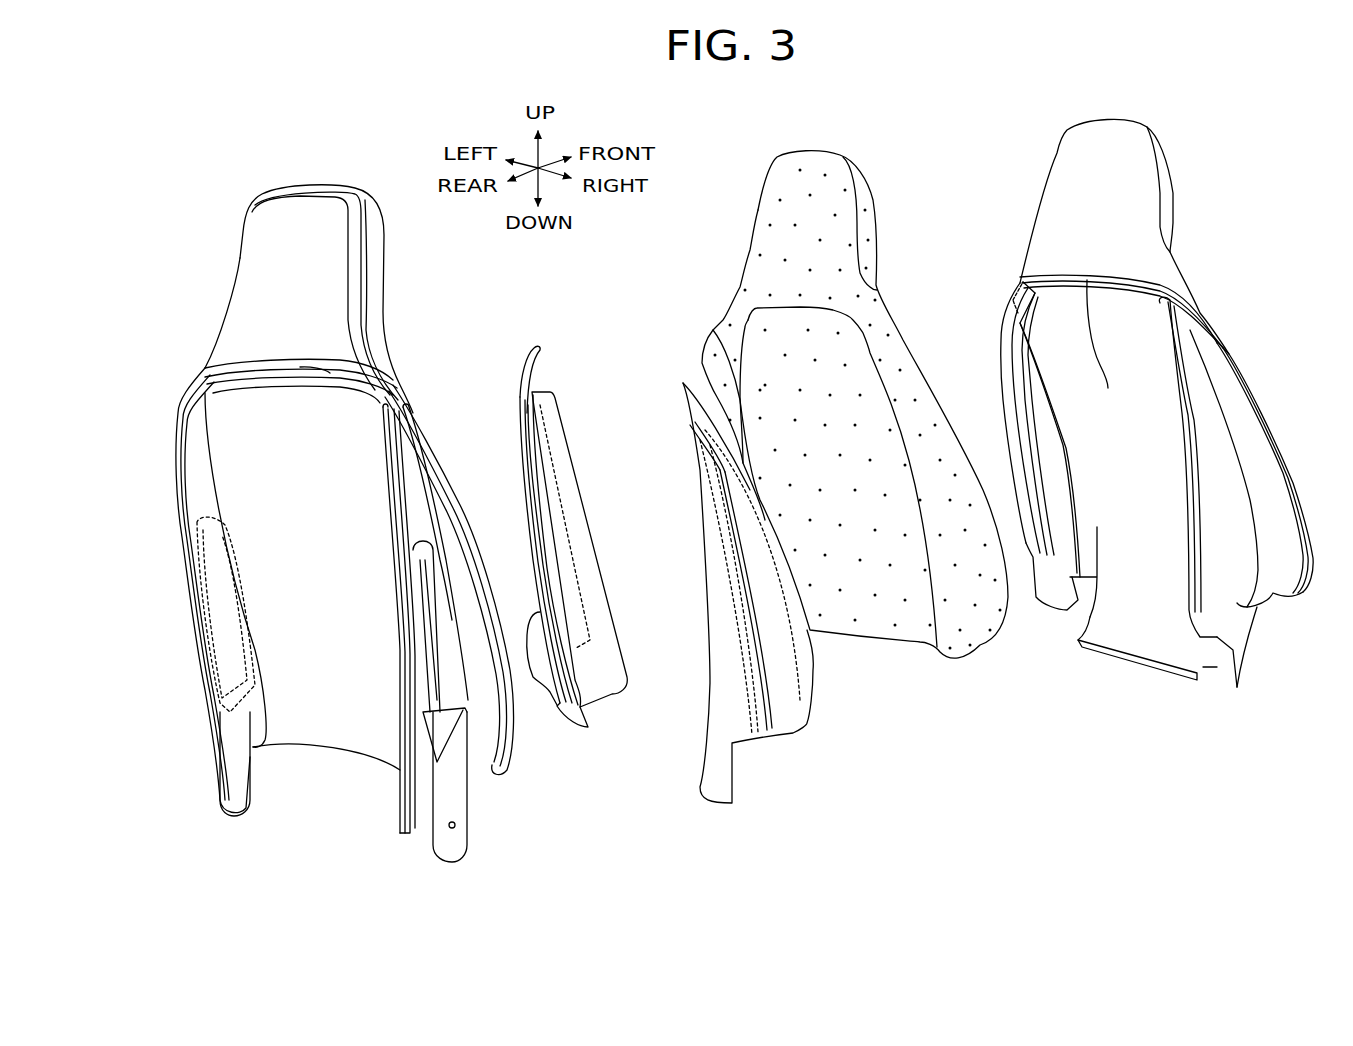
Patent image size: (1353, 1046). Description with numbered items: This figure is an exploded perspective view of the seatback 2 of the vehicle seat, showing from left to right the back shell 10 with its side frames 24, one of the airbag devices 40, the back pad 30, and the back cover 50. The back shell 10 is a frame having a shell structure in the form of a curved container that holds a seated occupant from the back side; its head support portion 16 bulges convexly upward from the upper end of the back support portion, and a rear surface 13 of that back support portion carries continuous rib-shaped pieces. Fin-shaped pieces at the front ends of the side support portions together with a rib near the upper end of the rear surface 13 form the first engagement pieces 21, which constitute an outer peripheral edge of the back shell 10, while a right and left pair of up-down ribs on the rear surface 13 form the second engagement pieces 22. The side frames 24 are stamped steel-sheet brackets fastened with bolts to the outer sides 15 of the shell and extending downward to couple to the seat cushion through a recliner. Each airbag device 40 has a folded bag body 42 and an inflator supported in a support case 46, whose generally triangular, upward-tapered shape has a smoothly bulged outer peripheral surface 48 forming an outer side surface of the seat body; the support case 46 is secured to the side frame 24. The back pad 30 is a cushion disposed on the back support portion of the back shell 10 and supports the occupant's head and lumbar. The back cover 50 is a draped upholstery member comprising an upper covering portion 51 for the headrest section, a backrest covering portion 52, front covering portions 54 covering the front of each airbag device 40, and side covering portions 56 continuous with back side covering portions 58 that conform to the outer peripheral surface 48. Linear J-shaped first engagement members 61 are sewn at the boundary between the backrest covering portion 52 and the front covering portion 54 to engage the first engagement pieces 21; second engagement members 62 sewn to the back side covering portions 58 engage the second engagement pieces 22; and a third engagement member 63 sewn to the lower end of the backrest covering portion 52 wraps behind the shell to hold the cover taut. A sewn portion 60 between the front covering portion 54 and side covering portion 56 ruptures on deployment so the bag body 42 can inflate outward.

The seatback 2 is at (906, 147).
The back shell 10 is at (238, 256).
The rear surface 13 is at (241, 418).
The outer sides 15 is at (417, 522).
The head support portion 16 is at (297, 230).
The first engagement pieces 21 is at (335, 377).
The second engagement pieces 22 is at (182, 420).
The side frames 24 is at (214, 790).
The back pad 30 is at (757, 212).
The airbag devices 40 is at (520, 373).
The bag body 42 is at (600, 598).
The support case 46 is at (712, 606).
The outer peripheral surface 48 is at (538, 693).
The back cover 50 is at (1056, 154).
The upper covering portion 51 is at (1137, 173).
The backrest covering portion 52 is at (1147, 565).
The front covering portions 54 is at (1245, 430).
The side covering portions 56 is at (1238, 570).
The back side covering portions 58 is at (1203, 667).
The sewn portion 60 is at (1220, 398).
The first engagement members 61 is at (1033, 363).
The second engagement members 62 is at (1048, 477).
The third engagement member 63 is at (1153, 663).